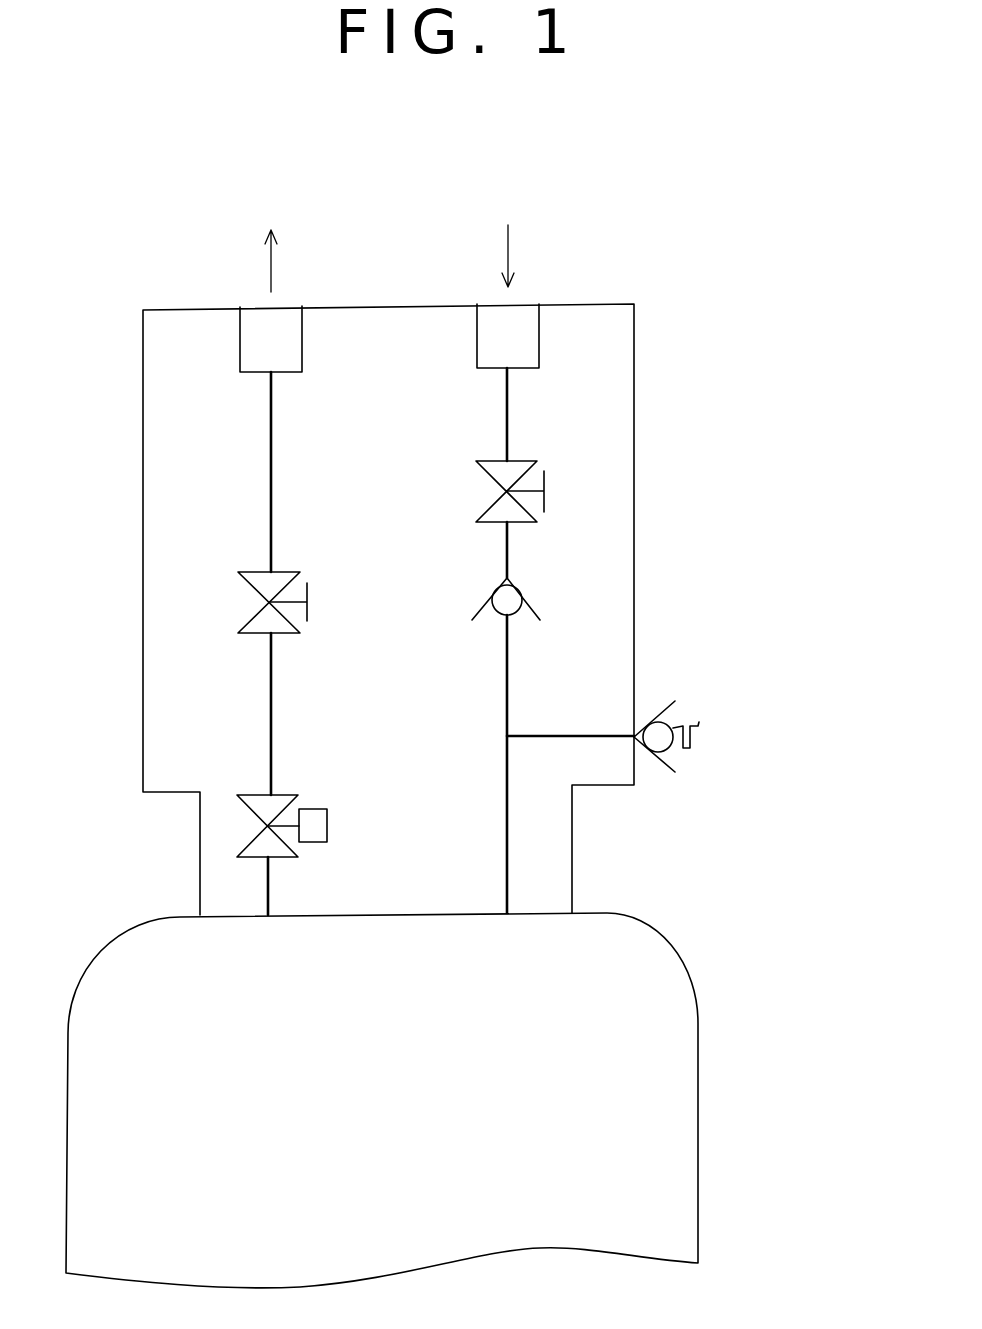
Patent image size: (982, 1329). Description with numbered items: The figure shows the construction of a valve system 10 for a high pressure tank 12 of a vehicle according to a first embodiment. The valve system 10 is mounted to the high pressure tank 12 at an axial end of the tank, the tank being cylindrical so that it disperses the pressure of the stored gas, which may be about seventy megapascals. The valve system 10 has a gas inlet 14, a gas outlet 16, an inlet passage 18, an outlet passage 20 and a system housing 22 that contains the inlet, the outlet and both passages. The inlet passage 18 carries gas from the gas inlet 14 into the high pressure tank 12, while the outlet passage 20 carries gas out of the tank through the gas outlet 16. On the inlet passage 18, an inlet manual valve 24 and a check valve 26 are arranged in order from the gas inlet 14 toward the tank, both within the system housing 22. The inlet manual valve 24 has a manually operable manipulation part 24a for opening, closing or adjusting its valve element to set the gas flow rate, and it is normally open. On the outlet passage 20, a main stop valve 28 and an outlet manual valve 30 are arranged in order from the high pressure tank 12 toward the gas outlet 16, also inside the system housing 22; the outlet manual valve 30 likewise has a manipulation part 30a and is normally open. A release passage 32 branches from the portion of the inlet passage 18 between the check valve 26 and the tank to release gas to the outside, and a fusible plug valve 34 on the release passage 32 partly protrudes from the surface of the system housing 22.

The valve system 10 is at (674, 242).
The high pressure tank 12 is at (700, 1082).
The gas inlet 14 is at (527, 304).
The gas outlet 16 is at (287, 308).
The inlet passage 18 is at (510, 400).
The outlet passage 20 is at (272, 452).
The system housing 22 is at (634, 640).
The inlet manual valve 24 is at (550, 499).
The manipulation part 24a is at (548, 470).
The check valve 26 is at (535, 610).
The main stop valve 28 is at (286, 795).
The outlet manual valve 30 is at (327, 566).
The manipulation part 30a is at (309, 590).
The release passage 32 is at (552, 736).
The fusible plug valve 34 is at (674, 722).